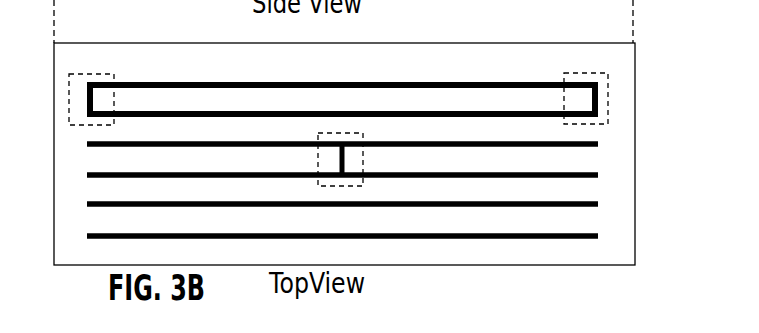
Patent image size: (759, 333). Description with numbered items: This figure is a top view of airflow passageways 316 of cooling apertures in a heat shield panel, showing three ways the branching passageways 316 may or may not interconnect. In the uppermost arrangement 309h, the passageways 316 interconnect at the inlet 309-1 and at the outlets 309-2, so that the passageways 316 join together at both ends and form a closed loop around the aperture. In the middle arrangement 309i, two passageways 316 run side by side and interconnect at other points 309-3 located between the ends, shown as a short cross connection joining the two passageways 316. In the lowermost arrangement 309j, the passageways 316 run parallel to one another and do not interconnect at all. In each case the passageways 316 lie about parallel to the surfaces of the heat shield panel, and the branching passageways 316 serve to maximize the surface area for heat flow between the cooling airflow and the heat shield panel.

The airflow passageway 316 is at (422, 82).
The passageways interconnected at inlet and outlets 309h is at (618, 100).
The passageways interconnected at other points 309i is at (618, 157).
The non-interconnected passageways 309j is at (618, 222).
The inlet 309-1 is at (588, 72).
The outlets 309-2 is at (93, 73).
The other interconnection points 309-3 is at (347, 133).